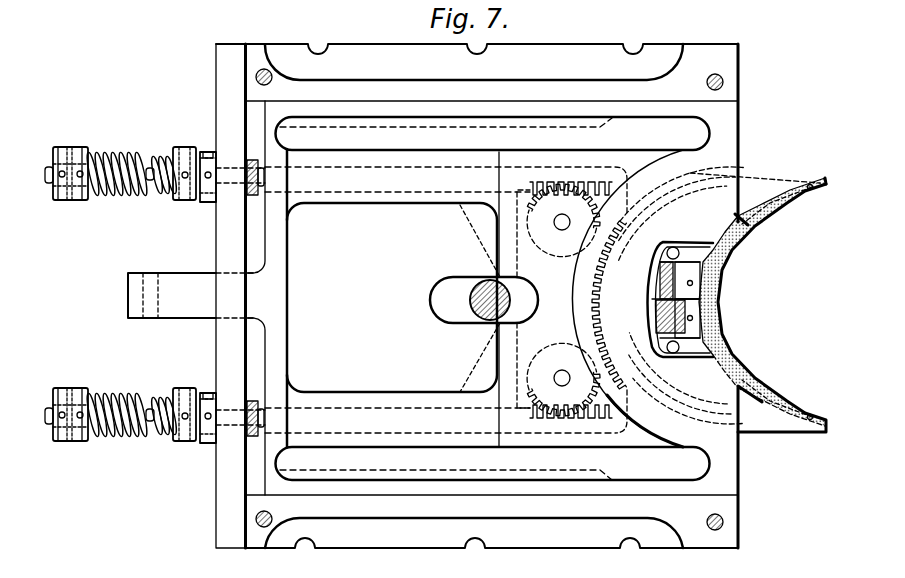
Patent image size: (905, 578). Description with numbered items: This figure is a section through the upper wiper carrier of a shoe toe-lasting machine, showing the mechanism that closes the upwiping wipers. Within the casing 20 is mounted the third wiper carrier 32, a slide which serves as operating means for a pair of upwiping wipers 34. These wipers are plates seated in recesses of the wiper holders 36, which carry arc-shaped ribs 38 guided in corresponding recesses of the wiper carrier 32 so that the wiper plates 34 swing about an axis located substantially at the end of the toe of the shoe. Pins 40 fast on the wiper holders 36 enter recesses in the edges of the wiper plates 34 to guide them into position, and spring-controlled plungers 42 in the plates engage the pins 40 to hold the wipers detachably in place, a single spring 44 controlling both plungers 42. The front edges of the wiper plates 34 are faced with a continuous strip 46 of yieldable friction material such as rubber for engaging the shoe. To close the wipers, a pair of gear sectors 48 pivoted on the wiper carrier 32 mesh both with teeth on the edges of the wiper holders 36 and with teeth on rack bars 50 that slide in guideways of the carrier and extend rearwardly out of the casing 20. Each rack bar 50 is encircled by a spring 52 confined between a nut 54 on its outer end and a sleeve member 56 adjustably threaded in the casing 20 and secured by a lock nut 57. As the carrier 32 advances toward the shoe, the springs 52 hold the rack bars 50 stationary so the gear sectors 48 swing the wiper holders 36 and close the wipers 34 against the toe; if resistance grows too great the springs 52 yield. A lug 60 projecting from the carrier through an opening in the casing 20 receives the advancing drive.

The casing 20 is at (218, 347).
The wiper carrier 32 is at (335, 200).
The upwiping wipers 34 is at (697, 277).
The wiper holders 36 is at (777, 180).
The arc-shaped ribs 38 is at (746, 210).
The pins 40 is at (680, 253).
The spring-controlled plungers 42 is at (675, 267).
The spring 44 is at (672, 303).
The strip of yieldable friction material 46 is at (820, 212).
The gear sectors 48 is at (530, 237).
The rack bars 50 is at (400, 182).
The springs 52 is at (133, 153).
The nuts 54 is at (80, 201).
The sleeve members 56 is at (185, 201).
The lock nuts 57 is at (208, 150).
The lug 60 is at (182, 286).